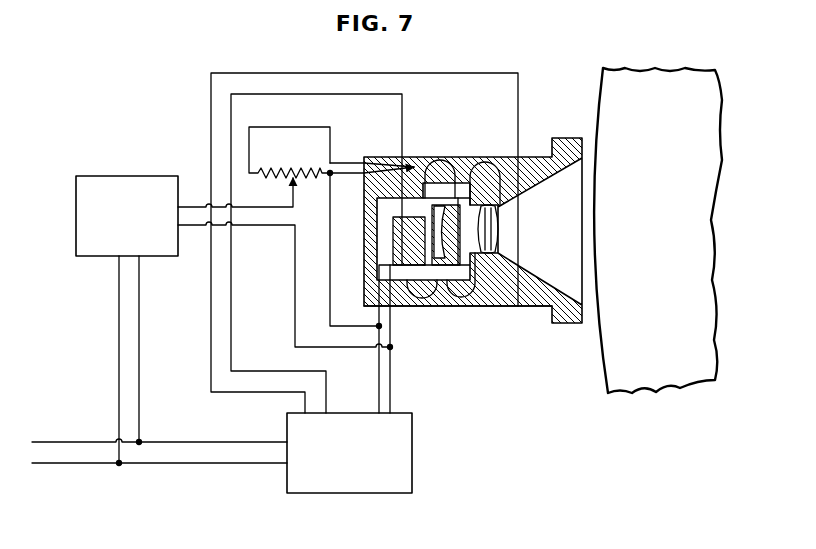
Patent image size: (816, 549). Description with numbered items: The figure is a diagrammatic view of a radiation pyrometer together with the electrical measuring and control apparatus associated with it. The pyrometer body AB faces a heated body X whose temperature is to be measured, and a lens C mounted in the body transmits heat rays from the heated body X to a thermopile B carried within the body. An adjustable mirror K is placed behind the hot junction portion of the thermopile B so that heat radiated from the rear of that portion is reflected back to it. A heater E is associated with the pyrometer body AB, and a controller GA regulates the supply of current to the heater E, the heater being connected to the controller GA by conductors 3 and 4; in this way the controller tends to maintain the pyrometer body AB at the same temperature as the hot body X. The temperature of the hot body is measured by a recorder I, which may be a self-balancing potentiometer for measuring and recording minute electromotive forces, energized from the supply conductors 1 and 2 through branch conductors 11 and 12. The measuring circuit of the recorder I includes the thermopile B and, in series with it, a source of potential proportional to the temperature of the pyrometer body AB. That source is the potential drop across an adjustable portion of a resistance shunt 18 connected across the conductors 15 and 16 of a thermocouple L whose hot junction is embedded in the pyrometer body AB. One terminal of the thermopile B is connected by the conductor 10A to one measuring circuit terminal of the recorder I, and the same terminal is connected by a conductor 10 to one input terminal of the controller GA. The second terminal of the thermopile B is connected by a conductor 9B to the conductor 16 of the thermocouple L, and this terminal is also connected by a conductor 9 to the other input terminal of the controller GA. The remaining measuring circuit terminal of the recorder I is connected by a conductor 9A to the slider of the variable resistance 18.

The recorder I is at (76, 183).
The controller GA is at (412, 423).
The supply conductor 1 is at (64, 442).
The supply conductor 2 is at (74, 463).
The branch conductor 11 is at (119, 329).
The branch conductor 12 is at (139, 329).
The conductor 9A is at (194, 207).
The conductor 10A is at (195, 225).
The conductor 4 is at (211, 302).
The conductor 3 is at (231, 302).
The resistance shunt 18 is at (288, 171).
The conductor 15 is at (340, 163).
The conductor 16 is at (353, 176).
The conductor 9B is at (330, 250).
The conductor 9 is at (379, 376).
The conductor 10 is at (390, 376).
The thermopile B is at (473, 222).
The adjustable mirror K is at (438, 213).
The pyrometer body AB is at (438, 157).
The thermocouple L is at (414, 166).
The lens C is at (499, 229).
The heater E is at (465, 306).
The heated body X is at (609, 103).